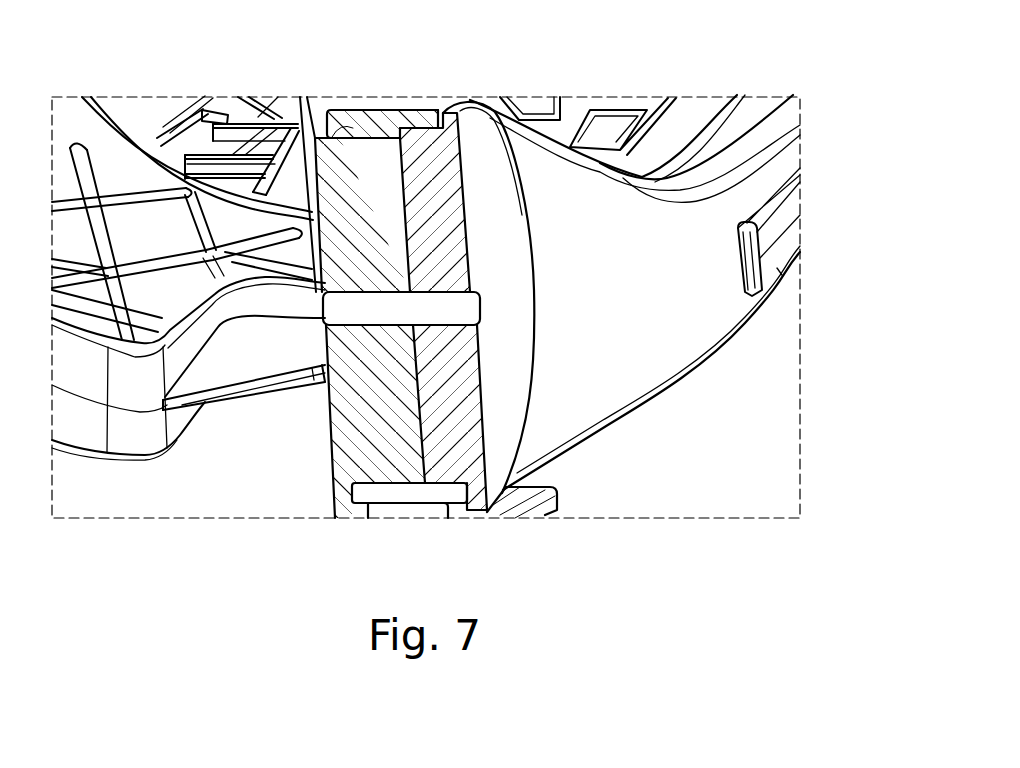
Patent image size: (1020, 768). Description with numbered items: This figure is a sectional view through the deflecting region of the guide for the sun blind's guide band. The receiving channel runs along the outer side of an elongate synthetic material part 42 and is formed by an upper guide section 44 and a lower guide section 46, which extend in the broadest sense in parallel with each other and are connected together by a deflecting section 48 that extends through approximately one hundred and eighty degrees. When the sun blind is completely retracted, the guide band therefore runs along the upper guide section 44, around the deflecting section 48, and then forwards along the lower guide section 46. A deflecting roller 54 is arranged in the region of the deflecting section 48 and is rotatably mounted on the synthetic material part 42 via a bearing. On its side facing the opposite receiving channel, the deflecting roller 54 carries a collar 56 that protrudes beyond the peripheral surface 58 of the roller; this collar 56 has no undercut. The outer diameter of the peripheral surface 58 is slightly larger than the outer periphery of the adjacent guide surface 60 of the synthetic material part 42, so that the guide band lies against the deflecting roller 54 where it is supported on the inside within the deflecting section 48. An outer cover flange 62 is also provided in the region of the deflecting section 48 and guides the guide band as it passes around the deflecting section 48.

The synthetic material part 42 is at (778, 272).
The upper guide section 44 is at (747, 113).
The lower guide section 46 is at (757, 319).
The deflecting section 48 is at (328, 477).
The deflecting roller 54 is at (491, 490).
The collar 56 is at (447, 112).
The peripheral surface 58 is at (418, 124).
The guide surface 60 is at (352, 126).
The outer cover flange 62 is at (417, 500).